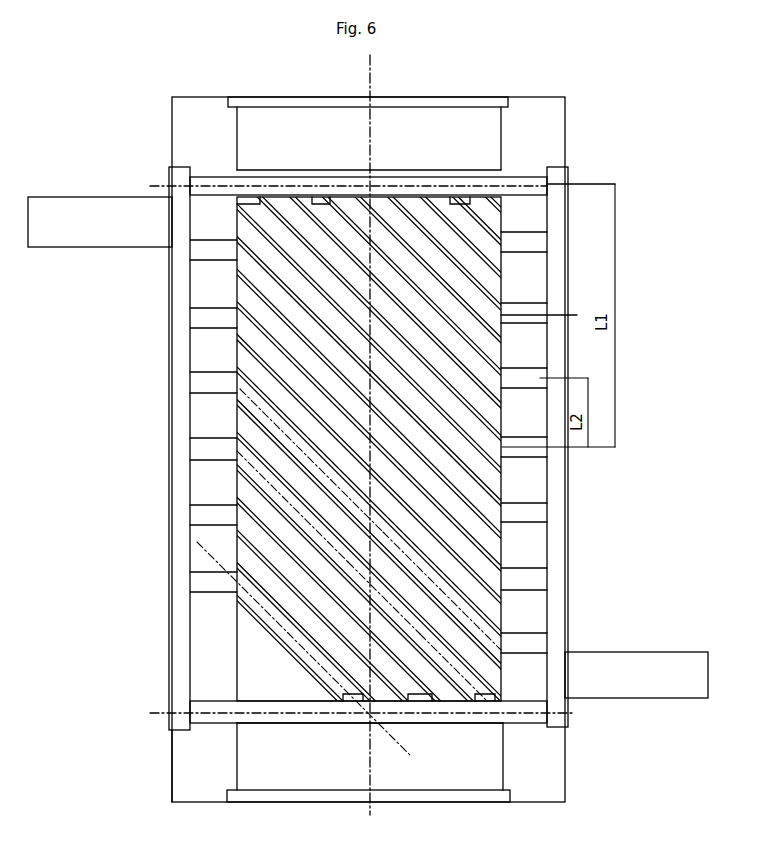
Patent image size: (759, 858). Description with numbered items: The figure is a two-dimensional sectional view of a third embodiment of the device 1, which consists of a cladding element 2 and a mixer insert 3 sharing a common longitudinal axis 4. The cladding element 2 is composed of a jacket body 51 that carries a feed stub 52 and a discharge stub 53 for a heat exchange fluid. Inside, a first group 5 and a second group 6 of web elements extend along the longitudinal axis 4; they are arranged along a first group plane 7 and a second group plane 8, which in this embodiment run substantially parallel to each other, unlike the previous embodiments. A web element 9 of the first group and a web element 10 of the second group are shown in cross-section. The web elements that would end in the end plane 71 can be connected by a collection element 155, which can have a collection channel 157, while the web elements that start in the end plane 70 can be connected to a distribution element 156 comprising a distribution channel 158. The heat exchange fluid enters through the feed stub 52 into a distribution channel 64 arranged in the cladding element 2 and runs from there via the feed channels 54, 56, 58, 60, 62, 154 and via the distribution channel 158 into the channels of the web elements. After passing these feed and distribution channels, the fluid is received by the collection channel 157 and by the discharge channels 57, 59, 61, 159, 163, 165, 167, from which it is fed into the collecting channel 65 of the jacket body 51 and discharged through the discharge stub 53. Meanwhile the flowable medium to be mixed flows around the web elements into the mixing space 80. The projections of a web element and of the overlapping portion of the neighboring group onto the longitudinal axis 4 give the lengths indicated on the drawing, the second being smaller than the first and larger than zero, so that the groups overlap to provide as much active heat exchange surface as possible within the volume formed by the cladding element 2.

The device 1 is at (93, 574).
The cladding element 2 is at (172, 753).
The mixer insert 3 is at (350, 728).
The longitudinal axis 4 is at (370, 812).
The first group 5 is at (398, 623).
The second group 6 is at (422, 580).
The first group plane 7 is at (348, 562).
The second group plane 8 is at (383, 530).
The web element 9 is at (437, 657).
The web element 10 is at (466, 607).
The jacket body 51 is at (532, 782).
The feed stub 52 is at (56, 227).
The discharge stub 53 is at (683, 688).
The feed channel 54 is at (197, 448).
The feed channel 56 is at (197, 513).
The discharge channel 57 is at (532, 643).
The feed channel 58 is at (197, 580).
The discharge channel 59 is at (532, 582).
The feed channel 60 is at (197, 318).
The discharge channel 61 is at (527, 512).
The feed channel 62 is at (197, 383).
The distribution channel 64 is at (185, 655).
The collecting channel 65 is at (553, 713).
The end plane 70 is at (150, 185).
The end plane 71 is at (148, 714).
The mixing space 80 is at (370, 756).
The feed channel 154 is at (205, 249).
The collection element 155 is at (290, 698).
The distribution element 156 is at (268, 170).
The collection channel 157 is at (218, 710).
The distribution channel 158 is at (208, 185).
The discharge channel 159 is at (525, 455).
The discharge channel 163 is at (525, 373).
The discharge channel 165 is at (517, 318).
The discharge channel 167 is at (517, 238).